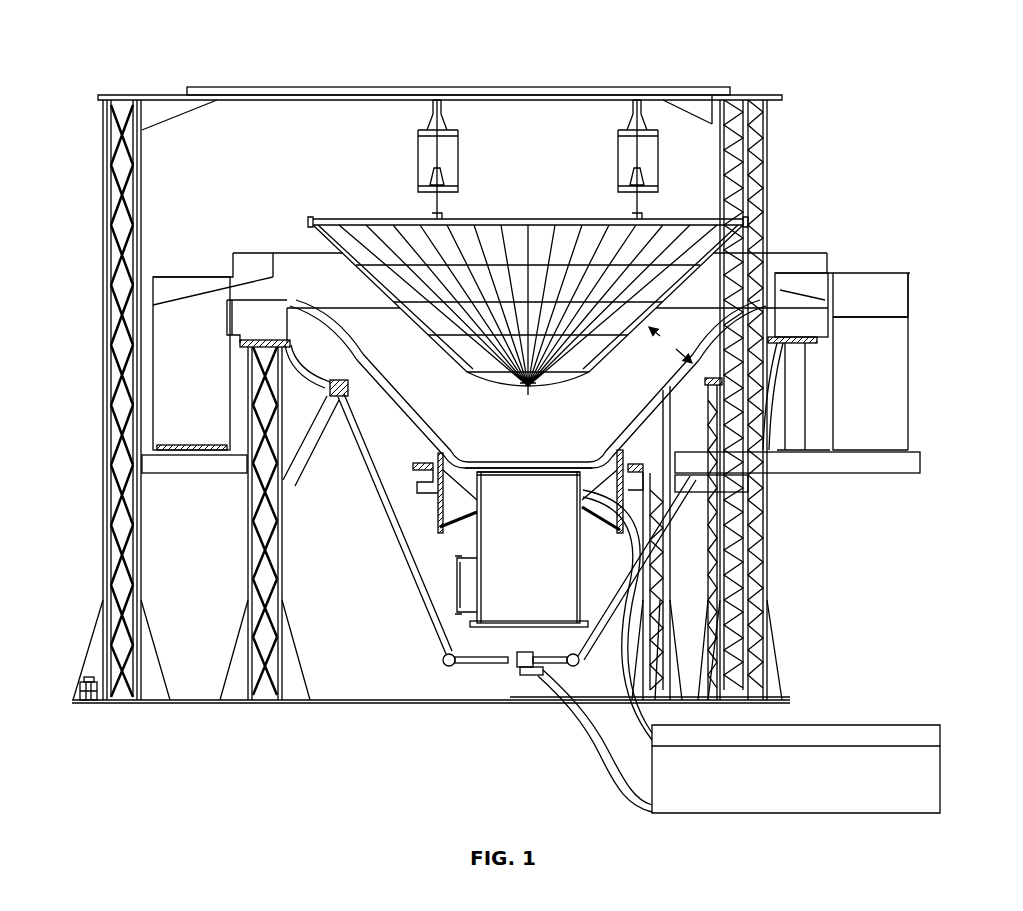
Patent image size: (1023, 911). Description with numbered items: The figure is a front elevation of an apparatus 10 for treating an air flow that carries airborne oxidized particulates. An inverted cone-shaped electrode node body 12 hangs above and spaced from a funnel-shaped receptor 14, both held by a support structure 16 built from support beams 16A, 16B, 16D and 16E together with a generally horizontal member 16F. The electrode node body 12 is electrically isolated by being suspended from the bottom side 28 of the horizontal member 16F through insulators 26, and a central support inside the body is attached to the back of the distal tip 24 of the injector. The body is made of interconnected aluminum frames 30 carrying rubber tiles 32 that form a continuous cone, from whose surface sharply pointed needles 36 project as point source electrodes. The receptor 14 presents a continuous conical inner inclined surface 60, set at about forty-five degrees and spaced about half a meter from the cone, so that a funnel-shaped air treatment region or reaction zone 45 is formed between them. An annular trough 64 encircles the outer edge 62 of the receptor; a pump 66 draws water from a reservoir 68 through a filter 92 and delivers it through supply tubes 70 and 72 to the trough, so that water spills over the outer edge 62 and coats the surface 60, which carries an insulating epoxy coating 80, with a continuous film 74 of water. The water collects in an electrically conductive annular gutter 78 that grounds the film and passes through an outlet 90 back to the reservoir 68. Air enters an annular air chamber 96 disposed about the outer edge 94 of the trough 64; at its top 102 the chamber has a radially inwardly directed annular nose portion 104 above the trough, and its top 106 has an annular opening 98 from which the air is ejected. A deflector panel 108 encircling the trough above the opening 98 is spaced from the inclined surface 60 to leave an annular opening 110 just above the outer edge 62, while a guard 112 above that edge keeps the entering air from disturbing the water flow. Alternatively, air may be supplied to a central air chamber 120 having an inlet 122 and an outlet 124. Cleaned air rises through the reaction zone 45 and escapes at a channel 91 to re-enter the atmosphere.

The apparatus 10 is at (150, 50).
The electrode node body 12 is at (307, 236).
The funnel-shaped receptor 14 is at (460, 411).
The support structure 16 is at (97, 395).
The support beam 16A is at (280, 572).
The support beam 16B is at (590, 702).
The support beam 16D is at (107, 527).
The support beam 16E is at (765, 533).
The horizontal member 16F is at (307, 92).
The distal tip of the injector 24 is at (528, 388).
The insulators 26 is at (425, 157).
The bottom side 28 is at (498, 99).
The aluminum frames 30 is at (488, 224).
The rubber tiles 32 is at (450, 240).
The needles 36 is at (493, 342).
The reaction zone 45 is at (695, 322).
The inner inclined surface 60 is at (674, 390).
The outer edge 62 is at (290, 333).
The annular trough 64 is at (242, 328).
The pump 66 is at (520, 668).
The reservoir 68 is at (928, 783).
The supply tube 70 is at (395, 588).
The supply tube 72 is at (597, 620).
The film of water 74 is at (610, 455).
The annular gutter 78 is at (450, 503).
The epoxy coating 80 is at (436, 450).
The outlet 90 is at (614, 505).
The channel 91 is at (295, 300).
The filter 92 is at (928, 737).
The outer edge 94 is at (835, 320).
The annular air chamber 96 is at (893, 410).
The annular opening 98 is at (795, 300).
The top 102 is at (870, 271).
The annular nose portion 104 is at (820, 283).
The top 106 is at (897, 296).
The deflector panel 108 is at (298, 304).
The annular opening 110 is at (306, 267).
The guard 112 is at (830, 349).
The central air chamber 120 is at (477, 656).
The inlet 122 is at (462, 599).
The outlet 124 is at (532, 476).